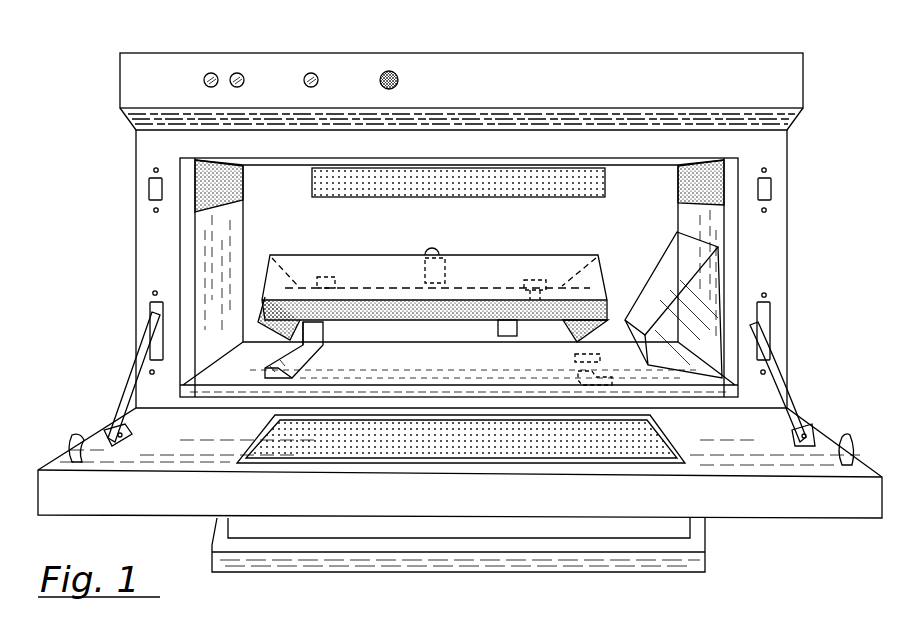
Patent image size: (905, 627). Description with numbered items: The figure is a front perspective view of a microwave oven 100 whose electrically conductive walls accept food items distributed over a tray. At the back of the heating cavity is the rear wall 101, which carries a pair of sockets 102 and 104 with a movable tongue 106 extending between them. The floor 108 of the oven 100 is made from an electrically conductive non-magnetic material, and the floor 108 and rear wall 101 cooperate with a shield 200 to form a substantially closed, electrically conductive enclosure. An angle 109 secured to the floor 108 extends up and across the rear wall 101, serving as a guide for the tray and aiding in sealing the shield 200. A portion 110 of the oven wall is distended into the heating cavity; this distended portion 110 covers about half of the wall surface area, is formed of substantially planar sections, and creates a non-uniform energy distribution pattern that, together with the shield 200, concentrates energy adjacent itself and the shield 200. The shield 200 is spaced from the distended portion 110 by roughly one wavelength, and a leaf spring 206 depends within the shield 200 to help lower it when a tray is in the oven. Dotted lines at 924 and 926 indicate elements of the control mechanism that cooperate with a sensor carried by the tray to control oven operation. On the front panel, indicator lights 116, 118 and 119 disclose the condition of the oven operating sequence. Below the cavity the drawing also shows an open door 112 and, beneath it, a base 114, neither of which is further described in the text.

The oven 100 is at (118, 229).
The rear wall 101 is at (263, 236).
The socket 102 is at (326, 275).
The socket 104 is at (536, 272).
The movable tongue 106 is at (440, 246).
The floor 108 is at (472, 370).
The angle 109 is at (324, 362).
The distended portion 110 is at (668, 262).
The door 112 is at (739, 505).
The base 114 is at (610, 570).
The indicator light 116 is at (238, 73).
The indicator light 118 is at (313, 73).
The indicator light 119 is at (392, 71).
The shield 200 is at (385, 253).
The leaf spring 206 is at (497, 331).
The control mechanism element 924 is at (578, 376).
The control mechanism element 926 is at (572, 358).